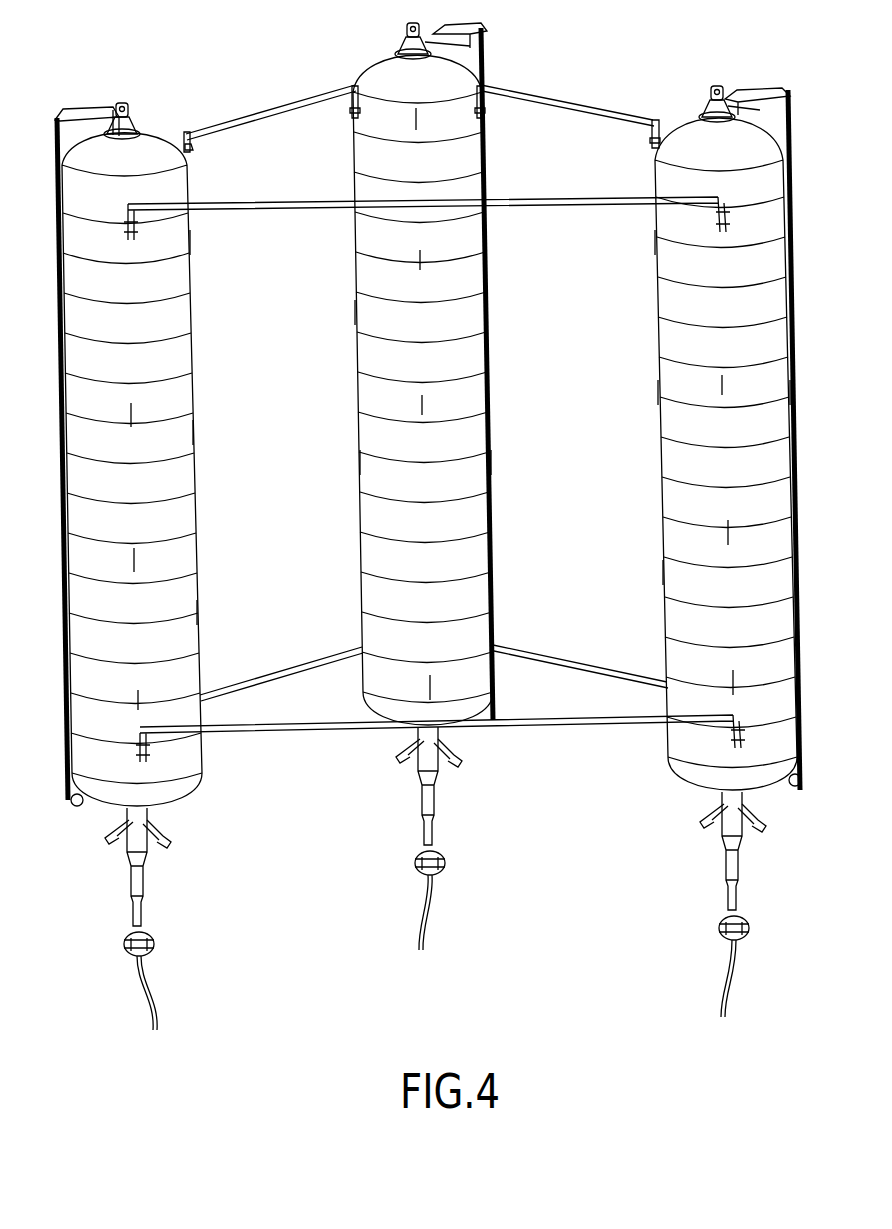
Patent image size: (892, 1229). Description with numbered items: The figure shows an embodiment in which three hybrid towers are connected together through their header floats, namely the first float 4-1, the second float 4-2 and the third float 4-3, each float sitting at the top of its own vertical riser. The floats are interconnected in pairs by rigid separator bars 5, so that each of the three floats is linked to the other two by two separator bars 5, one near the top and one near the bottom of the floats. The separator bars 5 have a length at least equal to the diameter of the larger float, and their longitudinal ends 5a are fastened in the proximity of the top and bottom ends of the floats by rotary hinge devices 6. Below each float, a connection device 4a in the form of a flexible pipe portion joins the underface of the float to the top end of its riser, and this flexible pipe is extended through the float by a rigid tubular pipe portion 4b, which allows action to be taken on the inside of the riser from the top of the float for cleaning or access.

The first float 4-1 is at (680, 132).
The second float 4-2 is at (374, 66).
The third float 4-3 is at (158, 150).
The connection device 4a is at (154, 1003).
The rigid tubular pipe portion 4b is at (130, 834).
The separator bar 5 is at (262, 114).
The longitudinal end 5a is at (187, 136).
The rotary hinge device 6 is at (192, 148).